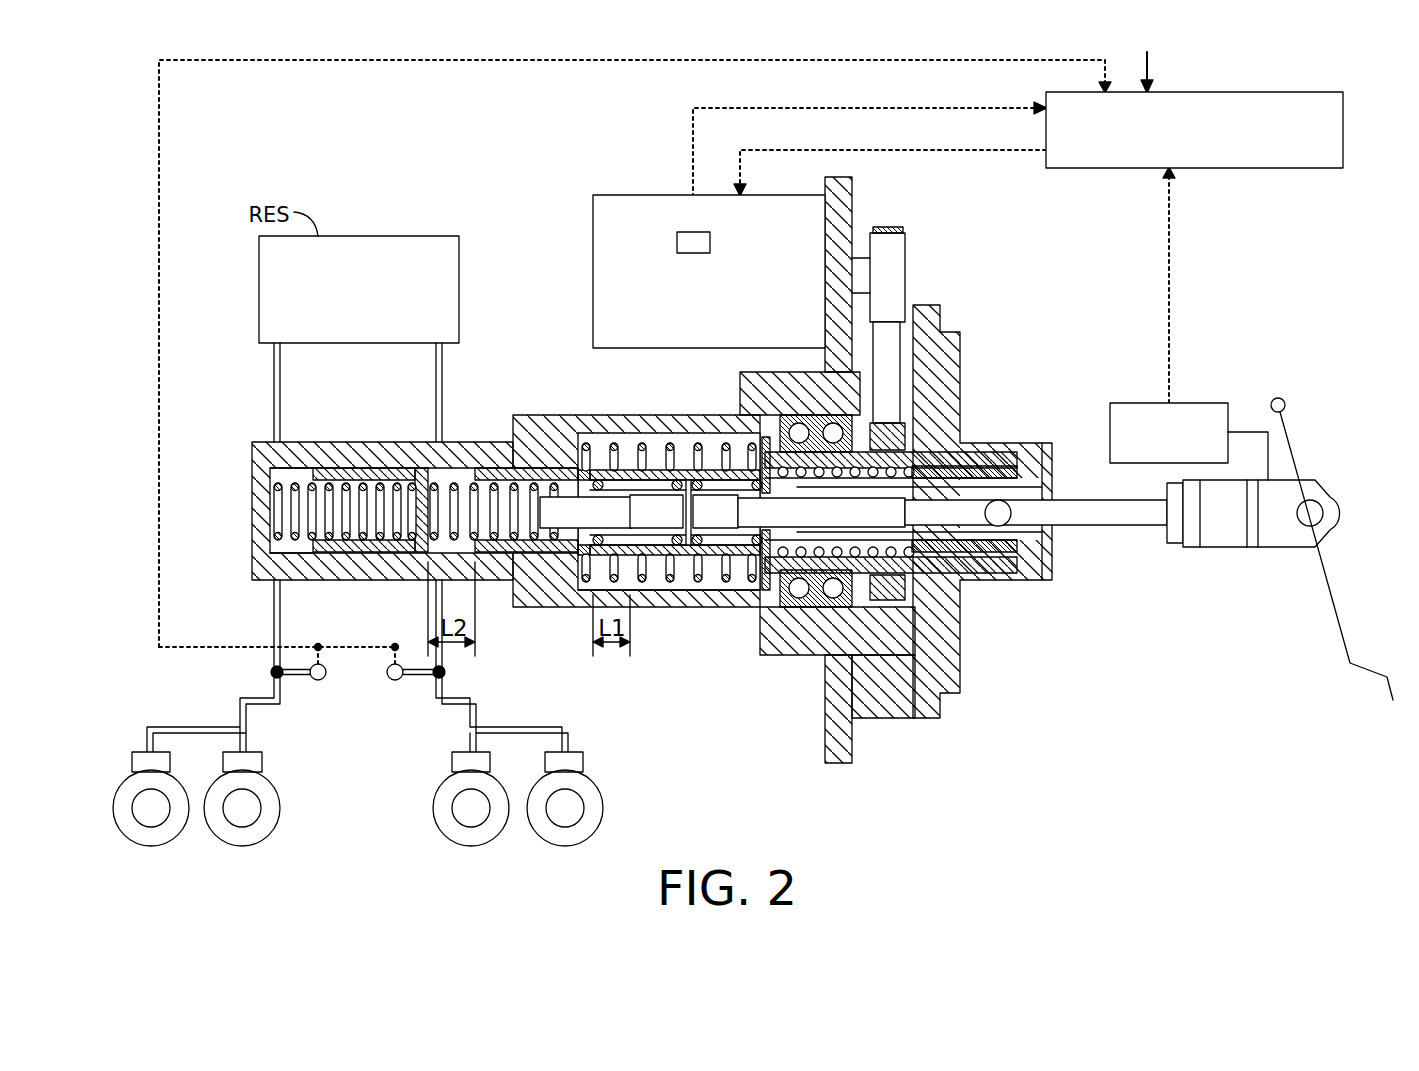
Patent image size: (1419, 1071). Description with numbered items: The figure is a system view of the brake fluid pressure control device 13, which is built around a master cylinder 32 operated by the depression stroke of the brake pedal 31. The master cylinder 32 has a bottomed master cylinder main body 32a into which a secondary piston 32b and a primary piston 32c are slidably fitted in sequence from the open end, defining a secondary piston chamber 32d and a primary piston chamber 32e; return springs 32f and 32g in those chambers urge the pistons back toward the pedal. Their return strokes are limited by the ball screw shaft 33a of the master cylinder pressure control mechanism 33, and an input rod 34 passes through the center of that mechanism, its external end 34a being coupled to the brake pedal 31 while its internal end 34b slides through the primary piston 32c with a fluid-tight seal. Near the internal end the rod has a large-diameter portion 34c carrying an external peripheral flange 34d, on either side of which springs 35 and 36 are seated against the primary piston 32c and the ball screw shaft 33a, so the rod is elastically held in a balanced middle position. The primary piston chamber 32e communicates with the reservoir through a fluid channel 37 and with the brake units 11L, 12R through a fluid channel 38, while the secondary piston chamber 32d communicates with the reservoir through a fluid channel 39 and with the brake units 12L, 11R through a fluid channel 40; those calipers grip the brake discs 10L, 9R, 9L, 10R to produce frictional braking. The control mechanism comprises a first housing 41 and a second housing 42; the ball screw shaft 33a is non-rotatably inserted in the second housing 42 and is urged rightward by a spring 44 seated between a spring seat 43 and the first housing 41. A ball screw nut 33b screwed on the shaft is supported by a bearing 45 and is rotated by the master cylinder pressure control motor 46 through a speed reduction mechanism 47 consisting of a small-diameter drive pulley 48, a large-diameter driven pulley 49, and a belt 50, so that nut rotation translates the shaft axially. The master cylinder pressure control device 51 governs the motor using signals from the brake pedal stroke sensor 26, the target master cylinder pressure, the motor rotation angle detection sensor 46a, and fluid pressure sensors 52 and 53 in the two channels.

The brake disc 9L is at (145, 846).
The brake disc 9R is at (570, 846).
The brake disc 10L is at (471, 846).
The brake disc 10R is at (242, 846).
The fluid pressure brake unit 11L is at (452, 756).
The fluid pressure brake unit 11R is at (262, 756).
The fluid pressure brake unit 12L is at (135, 752).
The fluid pressure brake unit 12R is at (583, 756).
The brake fluid pressure control device 13 is at (146, 146).
The brake pedal stroke sensor 26 is at (1216, 403).
The brake pedal 31 is at (1385, 658).
The master cylinder 32 is at (325, 430).
The master cylinder main body 32a is at (252, 460).
The secondary piston 32b is at (356, 468).
The primary piston 32c is at (533, 468).
The secondary piston chamber 32d is at (285, 550).
The primary piston chamber 32e is at (437, 482).
The return spring 32f is at (294, 480).
The return spring 32g is at (472, 480).
The master cylinder pressure control mechanism 33 is at (1002, 294).
The ball screw shaft 33a is at (1018, 460).
The ball screw nut 33b is at (908, 454).
The input rod 34 is at (1097, 538).
The external end 34a is at (1150, 518).
The internal end 34b is at (556, 572).
The large-diameter portion 34c is at (657, 496).
The external peripheral flange 34d is at (689, 546).
The spring 35 is at (590, 468).
The spring 36 is at (740, 450).
The fluid channel 37 is at (442, 376).
The fluid channel 38 is at (444, 674).
The fluid channel 39 is at (273, 380).
The fluid channel 40 is at (274, 622).
The first housing 41 is at (650, 608).
The second housing 42 is at (886, 706).
The spring seat 43 is at (765, 612).
The spring 44 is at (669, 443).
The bearing 45 is at (796, 614).
The master cylinder pressure control motor 46 is at (632, 195).
The motor rotation angle detection sensor 46a is at (694, 253).
The speed reduction mechanism 47 is at (920, 250).
The small-diameter drive pulley 48 is at (906, 283).
The large-diameter driven pulley 49 is at (910, 578).
The belt 50 is at (922, 352).
The master cylinder pressure control device 51 is at (1343, 150).
The fluid pressure sensor 52 is at (394, 681).
The fluid pressure sensor 53 is at (318, 681).